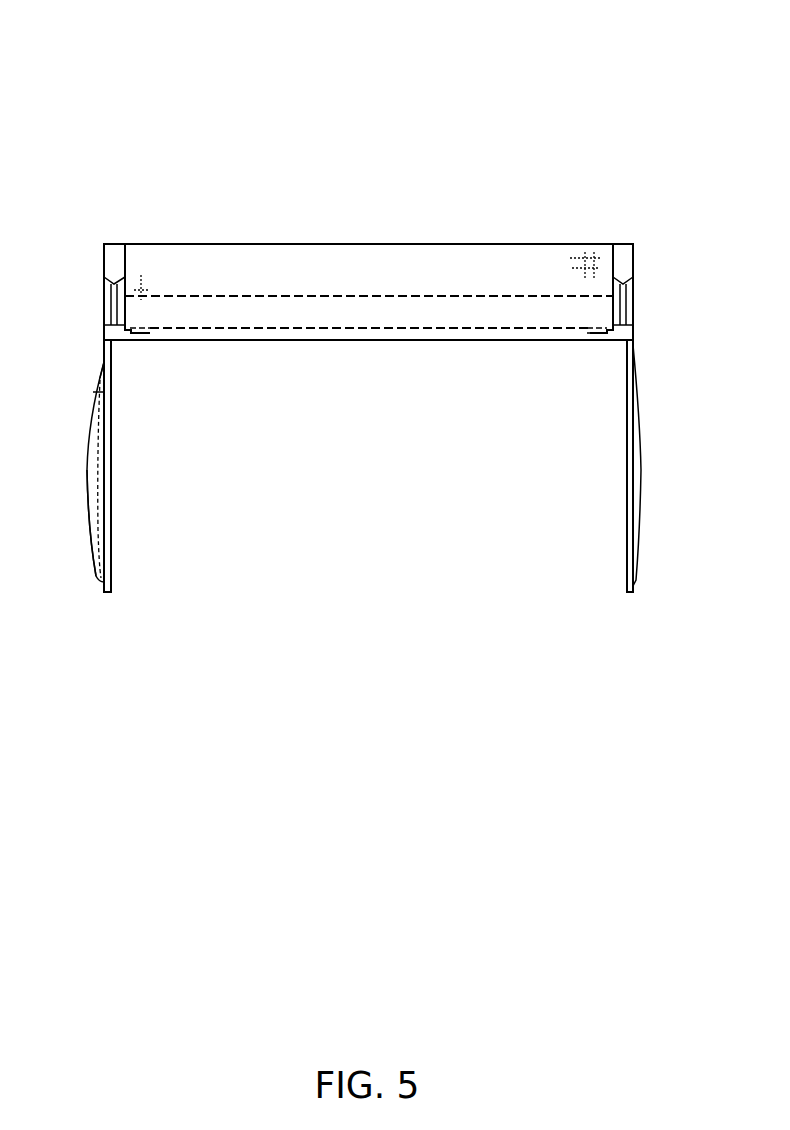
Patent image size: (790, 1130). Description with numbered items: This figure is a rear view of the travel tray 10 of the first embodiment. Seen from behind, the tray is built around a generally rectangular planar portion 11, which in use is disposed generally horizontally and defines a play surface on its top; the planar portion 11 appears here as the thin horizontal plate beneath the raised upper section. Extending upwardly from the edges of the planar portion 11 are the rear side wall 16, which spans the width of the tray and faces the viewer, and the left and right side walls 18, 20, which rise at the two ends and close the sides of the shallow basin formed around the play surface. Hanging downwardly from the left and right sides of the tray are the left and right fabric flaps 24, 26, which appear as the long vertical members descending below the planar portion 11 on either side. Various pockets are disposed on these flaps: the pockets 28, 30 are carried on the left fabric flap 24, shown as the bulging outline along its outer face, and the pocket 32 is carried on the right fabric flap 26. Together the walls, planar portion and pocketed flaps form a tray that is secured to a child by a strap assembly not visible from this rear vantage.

The travel tray 10 is at (163, 108).
The planar portion 11 is at (335, 331).
The rear side wall 16 is at (348, 260).
The left side wall 18 is at (104, 262).
The right side wall 20 is at (633, 262).
The left fabric flap 24 is at (104, 352).
The right fabric flap 26 is at (633, 350).
The pocket 28 is at (96, 505).
The pocket 30 is at (95, 447).
The pocket 32 is at (638, 500).